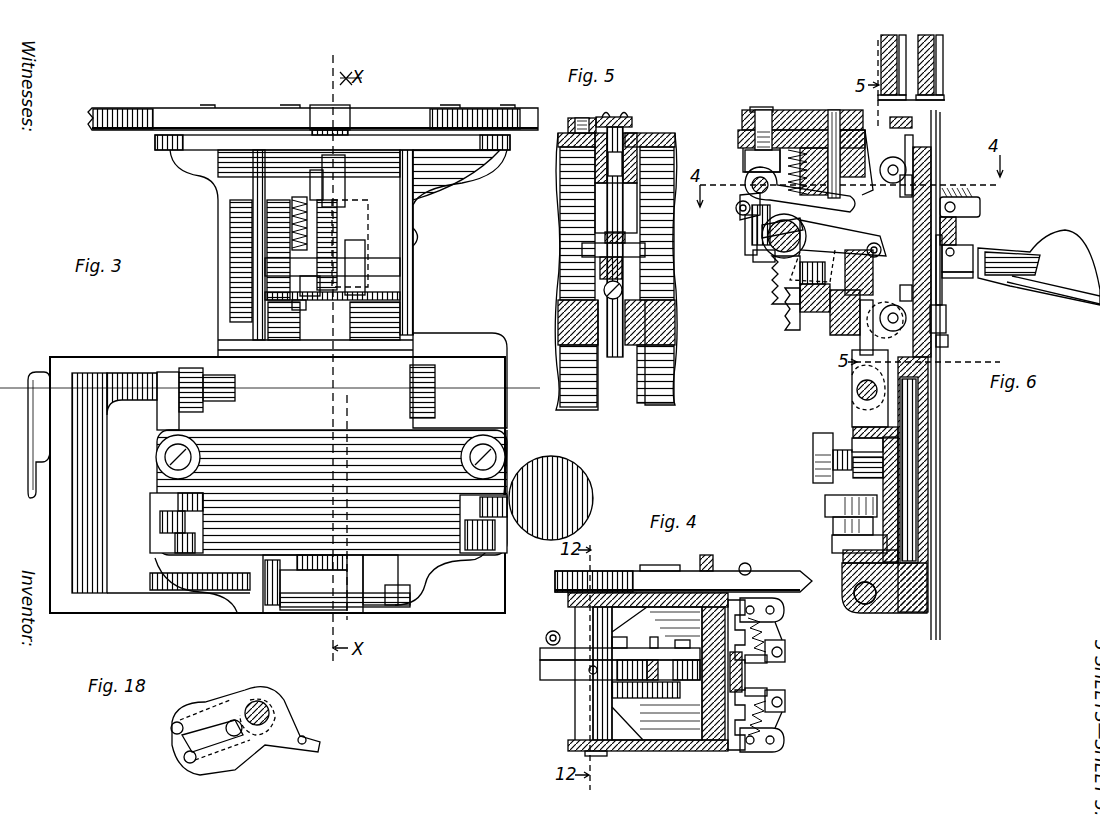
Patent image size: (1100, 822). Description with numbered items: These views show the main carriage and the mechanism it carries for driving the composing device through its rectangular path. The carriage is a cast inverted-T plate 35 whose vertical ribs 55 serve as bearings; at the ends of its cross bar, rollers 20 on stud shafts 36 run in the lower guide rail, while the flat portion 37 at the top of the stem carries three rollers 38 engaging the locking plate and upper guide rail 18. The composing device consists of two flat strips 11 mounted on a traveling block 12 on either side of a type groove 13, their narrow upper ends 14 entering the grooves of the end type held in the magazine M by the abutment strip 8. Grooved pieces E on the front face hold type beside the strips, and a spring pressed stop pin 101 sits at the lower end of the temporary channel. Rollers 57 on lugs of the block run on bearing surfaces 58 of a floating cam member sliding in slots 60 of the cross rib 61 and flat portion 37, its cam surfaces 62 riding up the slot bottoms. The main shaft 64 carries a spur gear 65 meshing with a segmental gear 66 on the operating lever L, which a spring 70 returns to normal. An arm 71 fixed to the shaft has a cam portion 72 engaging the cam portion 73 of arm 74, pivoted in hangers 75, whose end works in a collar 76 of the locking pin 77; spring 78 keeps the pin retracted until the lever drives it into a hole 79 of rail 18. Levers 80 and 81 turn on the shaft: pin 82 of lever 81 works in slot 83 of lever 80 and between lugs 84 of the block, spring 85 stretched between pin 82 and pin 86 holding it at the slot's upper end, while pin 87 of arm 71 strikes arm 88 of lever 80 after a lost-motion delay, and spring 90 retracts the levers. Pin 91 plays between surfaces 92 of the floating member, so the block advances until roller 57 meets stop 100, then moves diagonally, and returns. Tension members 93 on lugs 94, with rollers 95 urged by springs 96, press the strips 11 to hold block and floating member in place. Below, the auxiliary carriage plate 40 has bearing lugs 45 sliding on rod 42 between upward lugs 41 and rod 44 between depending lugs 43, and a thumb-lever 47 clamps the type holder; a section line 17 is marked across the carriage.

In FIG. 6, the abutment strip 8 is at (950, 90).
In FIG. 6, the strips 11 is at (944, 290).
In FIG. 6, the traveling block 12 is at (932, 172).
In FIG. 6, the type groove 13 is at (925, 160).
In FIG. 4, the type groove 13 is at (745, 672).
In FIG. 5, the upper ends 14 is at (604, 116).
In FIG. 6, the upper ends 14 is at (942, 114).
In FIG. 4, the upper ends 14 is at (683, 573).
In FIG. 3, the section line / hook 17 is at (11, 381).
In FIG. 6, the locking plate and upper guide rail 18 is at (795, 112).
In FIG. 4, the locking plate and upper guide rail 18 is at (528, 654).
In FIG. 3, the friction reducing rollers 20 is at (165, 462).
In FIG. 6, the friction reducing rollers 20 is at (813, 443).
In FIG. 3, the carriage plate 35 is at (235, 182).
In FIG. 6, the stud shafts 36 is at (855, 443).
In FIG. 3, the flat portion 37 is at (198, 150).
In FIG. 6, the flat portion 37 is at (740, 140).
In FIG. 3, the friction rollers 38 is at (345, 112).
In FIG. 3, the auxiliary carriage plate 40 is at (198, 600).
In FIG. 6, the auxiliary carriage plate 40 is at (920, 392).
In FIG. 3, the upwardly directed lugs 41 is at (165, 392).
In FIG. 3, the rod 42 is at (218, 385).
In FIG. 6, the rod 42 is at (857, 388).
In FIG. 3, the downwardly depending lugs 43 is at (255, 605).
In FIG. 3, the short rod 44 is at (385, 588).
In FIG. 6, the short rod 44 is at (855, 588).
In FIG. 3, the bearing lugs 45 is at (188, 385).
In FIG. 6, the bearing lugs 45 is at (932, 372).
In FIG. 3, the thumb-lever 47 is at (551, 498).
In FIG. 3, the vertical ribs 55 is at (258, 200).
In FIG. 6, the roller bearings 57 is at (962, 308).
In FIG. 6, the bearing surfaces 58 is at (890, 157).
In FIG. 6, the slots 60 is at (862, 130).
In FIG. 6, the cross rib 61 is at (786, 325).
In FIG. 6, the cam surfaces 62 is at (852, 108).
In FIG. 3, the main shaft 64 is at (418, 233).
In FIG. 18, the main shaft 64 is at (270, 715).
In FIG. 6, the main shaft 64 is at (762, 240).
In FIG. 4, the main shaft 64 is at (590, 753).
In FIG. 3, the spur gear 65 is at (230, 235).
In FIG. 3, the segmental gear 66 is at (230, 290).
In FIG. 6, the spring 70 is at (956, 232).
In FIG. 6, the arm 71 is at (721, 212).
In FIG. 4, the arm 71 is at (545, 670).
In FIG. 6, the cam portion 72 is at (760, 232).
In FIG. 6, the cam portion 73 is at (752, 220).
In FIG. 6, the arm 74 is at (746, 188).
In FIG. 6, the hangers 75 is at (743, 160).
In FIG. 6, the collar 76 is at (811, 177).
In FIG. 6, the locking pin 77 is at (818, 125).
In FIG. 6, the spring 78 is at (748, 168).
In FIG. 6, the hole 79 is at (833, 125).
In FIG. 18, the lever 80 is at (248, 712).
In FIG. 6, the lever 80 is at (800, 290).
In FIG. 4, the lever 80 is at (645, 652).
In FIG. 6, the lever 81 is at (772, 282).
In FIG. 4, the lever 81 is at (650, 690).
In FIG. 18, the pin 82 is at (172, 727).
In FIG. 6, the pin 82 is at (872, 242).
In FIG. 18, the slot 83 is at (185, 755).
In FIG. 6, the lugs 84 is at (899, 238).
In FIG. 18, the spring 85 is at (212, 760).
In FIG. 18, the pin 86 is at (250, 765).
In FIG. 6, the pin 87 is at (735, 208).
In FIG. 4, the pin 87 is at (542, 655).
In FIG. 6, the arm 88 is at (760, 262).
In FIG. 4, the arm 88 is at (560, 628).
In FIG. 6, the spring 90 is at (775, 237).
In FIG. 6, the pin 91 is at (820, 305).
In FIG. 6, the surfaces 92 is at (815, 275).
In FIG. 6, the tension members 93 is at (980, 200).
In FIG. 4, the tension members 93 is at (786, 649).
In FIG. 4, the lugs 94 is at (785, 602).
In FIG. 4, the rollers 95 is at (767, 660).
In FIG. 4, the springs 96 is at (785, 618).
In FIG. 6, the stop 100 is at (908, 110).
In FIG. 6, the stop pin 101 is at (948, 340).
In FIG. 4, the grooved pieces E is at (775, 640).
In FIG. 6, the operating lever L is at (1021, 267).
In FIG. 6, the guide member M is at (942, 70).